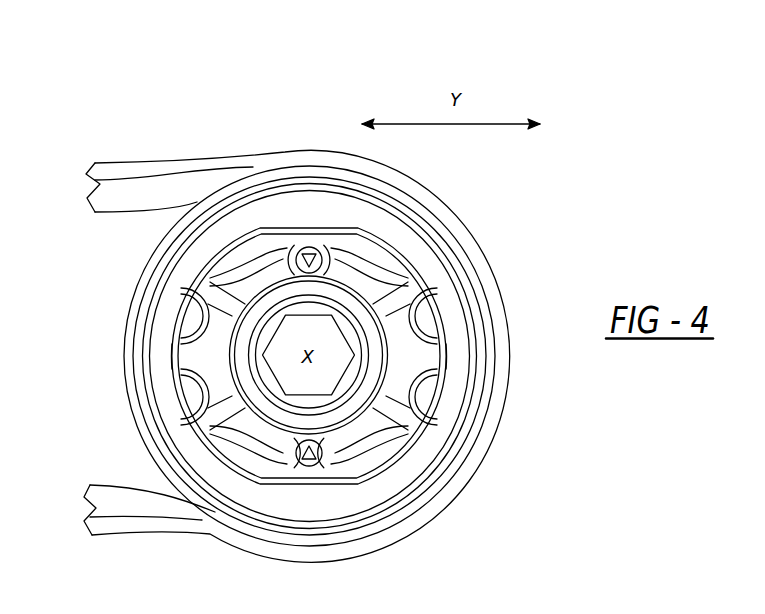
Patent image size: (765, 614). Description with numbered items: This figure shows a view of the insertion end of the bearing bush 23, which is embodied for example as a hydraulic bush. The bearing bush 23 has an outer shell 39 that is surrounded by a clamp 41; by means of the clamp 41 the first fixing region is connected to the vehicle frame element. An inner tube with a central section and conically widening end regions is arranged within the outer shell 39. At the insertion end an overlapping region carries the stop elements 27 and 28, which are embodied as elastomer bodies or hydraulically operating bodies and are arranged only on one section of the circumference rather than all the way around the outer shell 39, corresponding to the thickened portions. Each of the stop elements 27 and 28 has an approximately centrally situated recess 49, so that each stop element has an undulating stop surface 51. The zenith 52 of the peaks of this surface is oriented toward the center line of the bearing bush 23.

The bearing bush 23 is at (298, 112).
The stop element 27 is at (423, 310).
The stop element 28 is at (197, 318).
The outer shell 39 is at (150, 254).
The clamp 41 is at (135, 170).
The recess 49 is at (185, 354).
The stop surface 51 is at (412, 288).
The zenith 52 is at (207, 398).